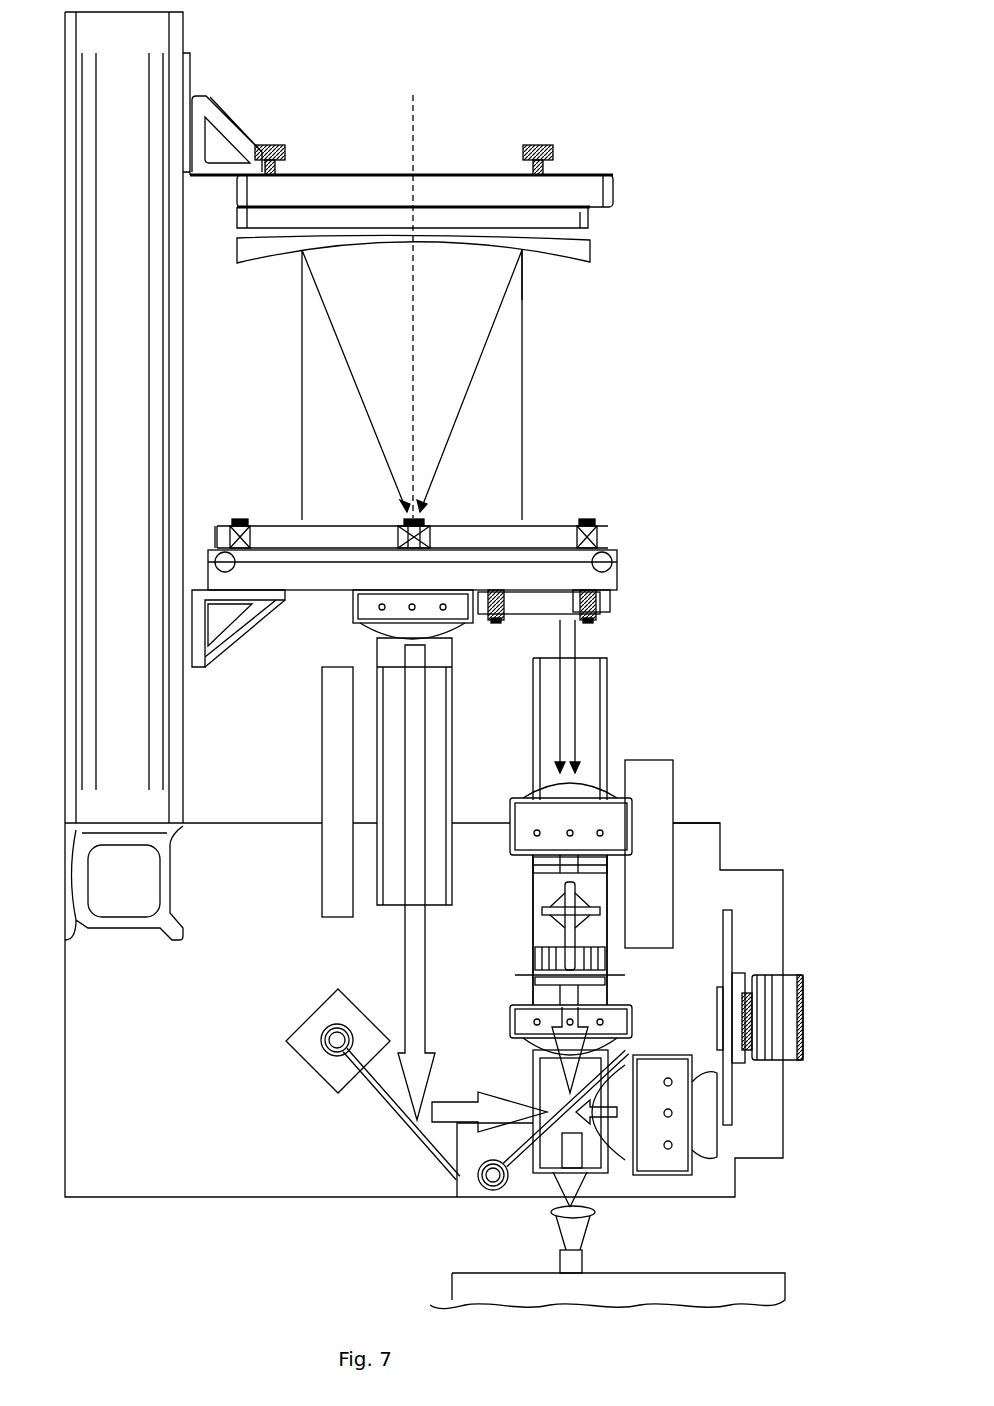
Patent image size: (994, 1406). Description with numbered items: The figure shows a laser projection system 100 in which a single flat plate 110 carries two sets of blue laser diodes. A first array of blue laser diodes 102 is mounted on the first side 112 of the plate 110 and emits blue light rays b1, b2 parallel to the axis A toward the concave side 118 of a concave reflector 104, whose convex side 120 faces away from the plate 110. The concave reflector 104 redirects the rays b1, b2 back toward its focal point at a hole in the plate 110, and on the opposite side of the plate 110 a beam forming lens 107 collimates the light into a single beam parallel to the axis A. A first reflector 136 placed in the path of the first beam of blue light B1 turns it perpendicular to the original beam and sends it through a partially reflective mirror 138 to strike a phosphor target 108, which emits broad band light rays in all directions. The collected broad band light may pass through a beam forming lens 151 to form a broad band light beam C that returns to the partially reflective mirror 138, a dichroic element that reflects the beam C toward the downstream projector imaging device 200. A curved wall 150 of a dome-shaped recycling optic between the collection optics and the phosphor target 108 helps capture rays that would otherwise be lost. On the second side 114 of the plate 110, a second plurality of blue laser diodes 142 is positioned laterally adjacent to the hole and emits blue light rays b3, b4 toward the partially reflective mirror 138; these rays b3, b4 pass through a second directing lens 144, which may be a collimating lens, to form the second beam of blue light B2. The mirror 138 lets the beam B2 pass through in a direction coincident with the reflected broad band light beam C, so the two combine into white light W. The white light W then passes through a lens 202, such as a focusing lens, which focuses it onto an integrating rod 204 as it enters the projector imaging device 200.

The laser projection system 100 is at (786, 153).
The array of blue laser diodes 102 is at (548, 503).
The concave reflector 104 is at (587, 263).
The beam forming lens 107 is at (432, 628).
The phosphor target 108 is at (728, 930).
The plate 110 is at (617, 580).
The first side 112 is at (215, 525).
The second side 114 is at (308, 590).
The concave side 118 is at (540, 250).
The convex side 120 is at (590, 240).
The first reflector 136 is at (382, 1100).
The partially reflective mirror 138 is at (520, 1177).
The second plurality of blue laser diodes 142 is at (520, 620).
The second directing lens 144 is at (590, 798).
The curved wall 150 is at (707, 1148).
The beam forming lens 151 is at (627, 1053).
The projector imaging device 200 is at (762, 1268).
The lens 202 is at (552, 1209).
The integrating rod 204 is at (585, 1263).
The axis A is at (413, 150).
The blue light ray b1 is at (302, 360).
The blue light ray b2 is at (522, 360).
The blue light ray b3 is at (558, 638).
The blue light ray b4 is at (578, 635).
The first beam of blue light B1 is at (413, 941).
The second beam of blue light B2 is at (565, 993).
The white light W is at (592, 1180).
The broad band light beam C is at (600, 1112).